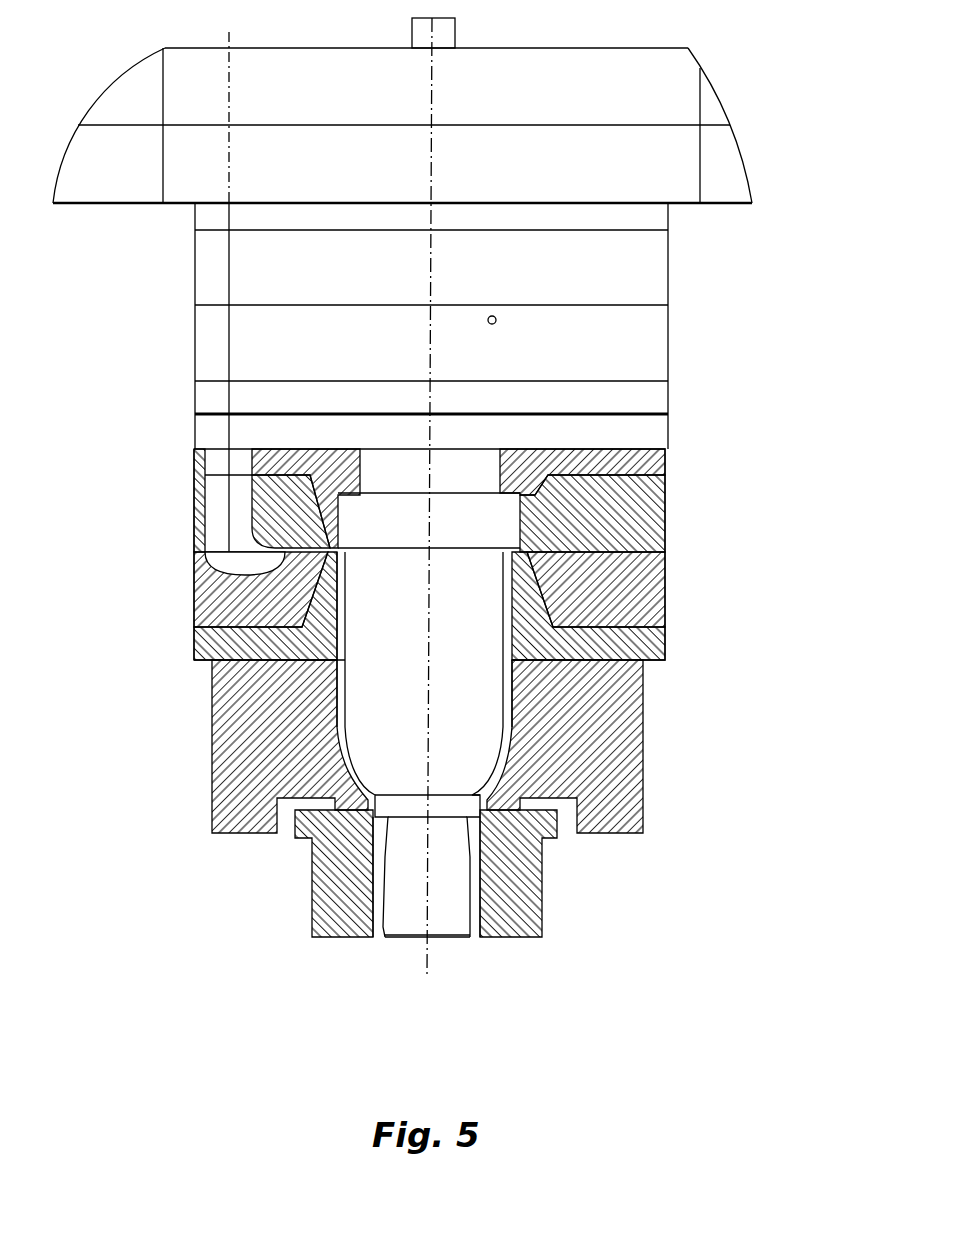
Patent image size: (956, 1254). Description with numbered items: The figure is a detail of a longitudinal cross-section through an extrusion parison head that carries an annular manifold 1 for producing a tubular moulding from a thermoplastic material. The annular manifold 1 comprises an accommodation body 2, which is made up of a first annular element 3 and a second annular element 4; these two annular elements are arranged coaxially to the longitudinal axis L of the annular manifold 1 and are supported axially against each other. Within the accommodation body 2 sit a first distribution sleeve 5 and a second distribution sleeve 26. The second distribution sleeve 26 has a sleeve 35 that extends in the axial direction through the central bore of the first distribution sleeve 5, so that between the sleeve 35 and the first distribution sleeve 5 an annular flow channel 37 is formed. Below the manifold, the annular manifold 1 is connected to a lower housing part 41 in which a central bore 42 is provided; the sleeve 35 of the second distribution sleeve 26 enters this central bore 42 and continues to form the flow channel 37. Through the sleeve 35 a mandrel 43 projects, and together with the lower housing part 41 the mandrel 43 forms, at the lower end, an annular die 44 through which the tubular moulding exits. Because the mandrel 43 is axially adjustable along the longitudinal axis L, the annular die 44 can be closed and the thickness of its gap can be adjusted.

The annular manifold 1 is at (755, 495).
The accommodation body 2 is at (672, 548).
The first annular element 3 is at (665, 568).
The second annular element 4 is at (665, 507).
The first distribution sleeve 5 is at (665, 640).
The second distribution sleeve 26 is at (665, 458).
The sleeve 35 is at (330, 683).
The annular flow channel 37 is at (513, 737).
The lower housing part 41 is at (630, 740).
The central bore 42 is at (512, 706).
The mandrel 43 is at (445, 885).
The annular die 44 is at (463, 937).
The longitudinal axis L is at (427, 962).